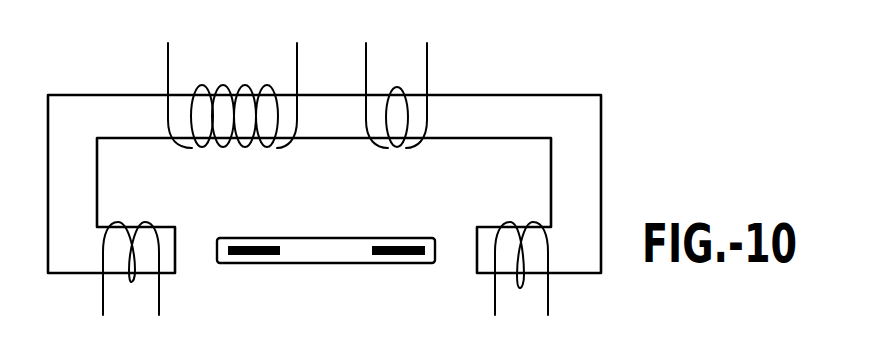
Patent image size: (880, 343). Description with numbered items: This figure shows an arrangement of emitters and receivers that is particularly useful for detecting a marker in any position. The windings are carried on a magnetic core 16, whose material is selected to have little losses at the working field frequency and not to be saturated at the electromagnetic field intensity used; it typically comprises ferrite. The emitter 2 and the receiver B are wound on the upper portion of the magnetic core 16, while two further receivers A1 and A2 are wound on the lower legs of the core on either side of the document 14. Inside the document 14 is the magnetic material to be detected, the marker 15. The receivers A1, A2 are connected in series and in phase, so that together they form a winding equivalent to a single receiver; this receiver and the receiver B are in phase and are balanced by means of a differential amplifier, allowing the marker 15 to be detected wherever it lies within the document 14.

The emitter 2 is at (232, 85).
The receiver B is at (396, 85).
The receiver A1 is at (131, 282).
The receiver A2 is at (521, 282).
The document 14 is at (405, 262).
The marker 15 is at (368, 254).
The magnetic core 16 is at (573, 147).